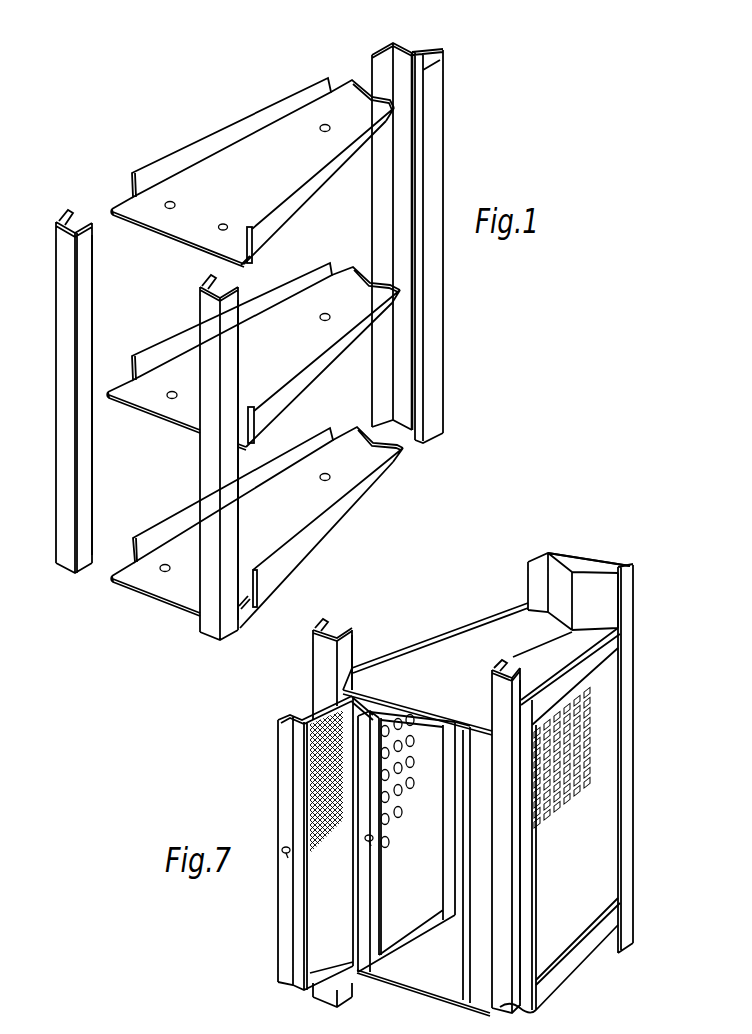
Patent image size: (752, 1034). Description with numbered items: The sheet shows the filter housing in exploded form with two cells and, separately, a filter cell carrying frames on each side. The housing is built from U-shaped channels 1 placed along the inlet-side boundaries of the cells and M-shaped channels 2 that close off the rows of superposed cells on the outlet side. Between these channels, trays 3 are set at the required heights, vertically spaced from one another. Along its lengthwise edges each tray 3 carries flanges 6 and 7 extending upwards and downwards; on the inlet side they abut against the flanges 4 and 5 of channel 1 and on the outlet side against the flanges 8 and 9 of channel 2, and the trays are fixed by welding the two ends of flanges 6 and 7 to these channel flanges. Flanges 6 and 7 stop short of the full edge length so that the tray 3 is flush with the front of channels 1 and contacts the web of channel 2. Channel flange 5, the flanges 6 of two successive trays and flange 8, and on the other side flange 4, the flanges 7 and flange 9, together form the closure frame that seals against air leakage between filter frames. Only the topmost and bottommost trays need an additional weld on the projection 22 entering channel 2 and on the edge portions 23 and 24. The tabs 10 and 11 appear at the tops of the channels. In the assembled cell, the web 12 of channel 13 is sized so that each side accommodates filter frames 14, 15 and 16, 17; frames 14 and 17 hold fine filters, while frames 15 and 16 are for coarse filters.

In FIG. 1, the U-shaped channel 1 is at (65, 316).
In FIG. 7, the U-shaped channel 1 is at (320, 994).
In FIG. 1, the M-shaped channel 2 is at (407, 58).
In FIG. 1, the tray 3 is at (252, 143).
In FIG. 7, the tray 3 is at (452, 667).
In FIG. 1, the flange of channel 1 4 is at (205, 279).
In FIG. 7, the flange of channel 1 4 is at (503, 666).
In FIG. 1, the flange of channel 1 5 is at (83, 300).
In FIG. 7, the flange of channel 1 5 is at (349, 650).
In FIG. 1, the flange of tray 6 is at (322, 188).
In FIG. 1, the flange of tray 7 is at (201, 147).
In FIG. 1, the flange of channel 2 8 is at (436, 92).
In FIG. 1, the flange of channel 2 9 is at (388, 47).
In FIG. 1, the top tab 10 is at (63, 213).
In FIG. 7, the top tab 10 is at (320, 625).
In FIG. 1, the post leg 11 is at (232, 356).
In FIG. 7, the post leg 11 is at (523, 683).
In FIG. 7, the web of channel 12 is at (592, 598).
In FIG. 7, the channel 13 is at (632, 567).
In FIG. 7, the filter frame 14 is at (283, 879).
In FIG. 7, the filter frame 15 is at (363, 962).
In FIG. 7, the filter frame 16 is at (455, 858).
In FIG. 7, the filter frame 17 is at (480, 905).
In FIG. 1, the projection 22 is at (358, 88).
In FIG. 1, the edge portion of tray 23 is at (122, 200).
In FIG. 1, the edge portion of tray 24 is at (240, 262).